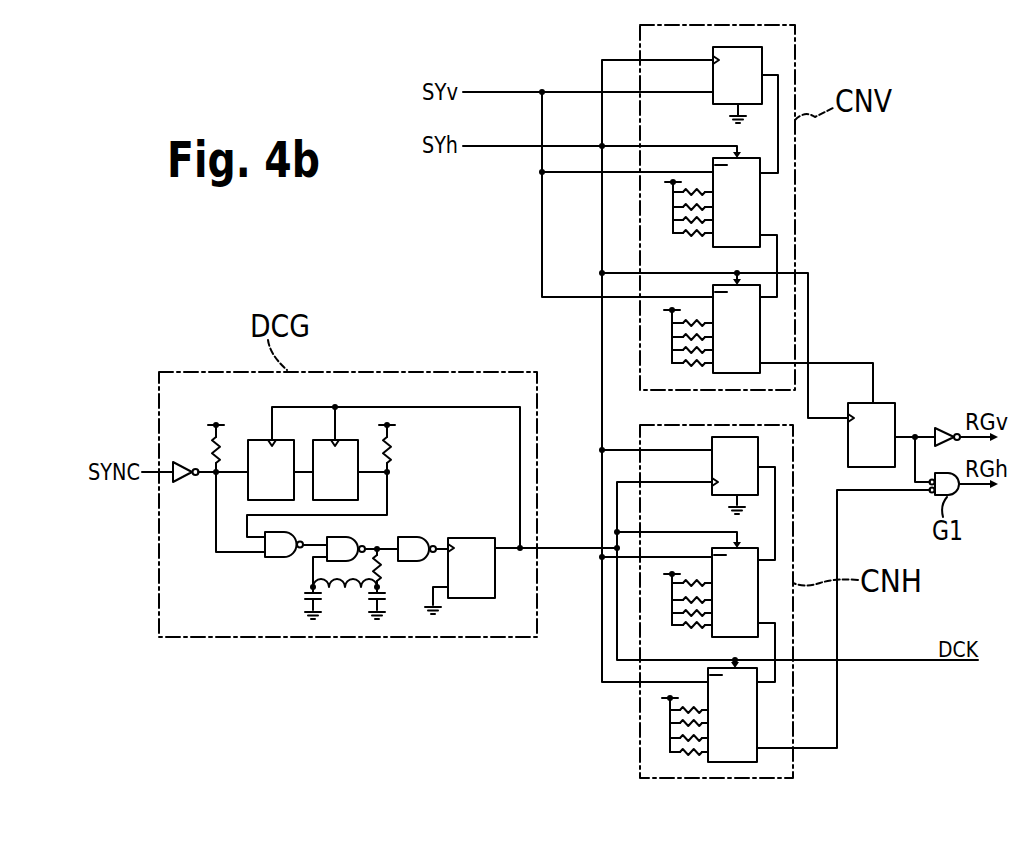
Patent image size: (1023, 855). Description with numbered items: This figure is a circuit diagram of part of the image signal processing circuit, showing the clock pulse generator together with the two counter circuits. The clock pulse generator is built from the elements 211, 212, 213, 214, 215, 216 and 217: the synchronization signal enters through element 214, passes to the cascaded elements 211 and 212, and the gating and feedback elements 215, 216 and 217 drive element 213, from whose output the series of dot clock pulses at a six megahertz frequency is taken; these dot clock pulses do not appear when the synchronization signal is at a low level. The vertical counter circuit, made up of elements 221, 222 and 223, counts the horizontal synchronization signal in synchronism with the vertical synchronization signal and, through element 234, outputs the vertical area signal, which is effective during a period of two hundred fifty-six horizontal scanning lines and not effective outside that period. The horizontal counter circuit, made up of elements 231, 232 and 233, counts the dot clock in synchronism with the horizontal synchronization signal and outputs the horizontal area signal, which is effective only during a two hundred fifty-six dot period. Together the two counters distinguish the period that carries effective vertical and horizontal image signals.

The D flip-flop 211 is at (272, 440).
The D flip-flop 212 is at (335, 440).
The JK flip-flop 213 is at (475, 538).
The inverter 214 is at (182, 483).
The NAND gate 215 is at (276, 558).
The NAND gate 216 is at (327, 554).
The NAND gate 217 is at (416, 537).
The JK flip-flop 221 is at (762, 55).
The presettable counter 222 is at (715, 247).
The presettable counter 223 is at (717, 373).
The JK flip-flop 231 is at (713, 496).
The presettable counter 232 is at (712, 637).
The presettable counter 233 is at (758, 761).
The D flip-flop 234 is at (895, 403).